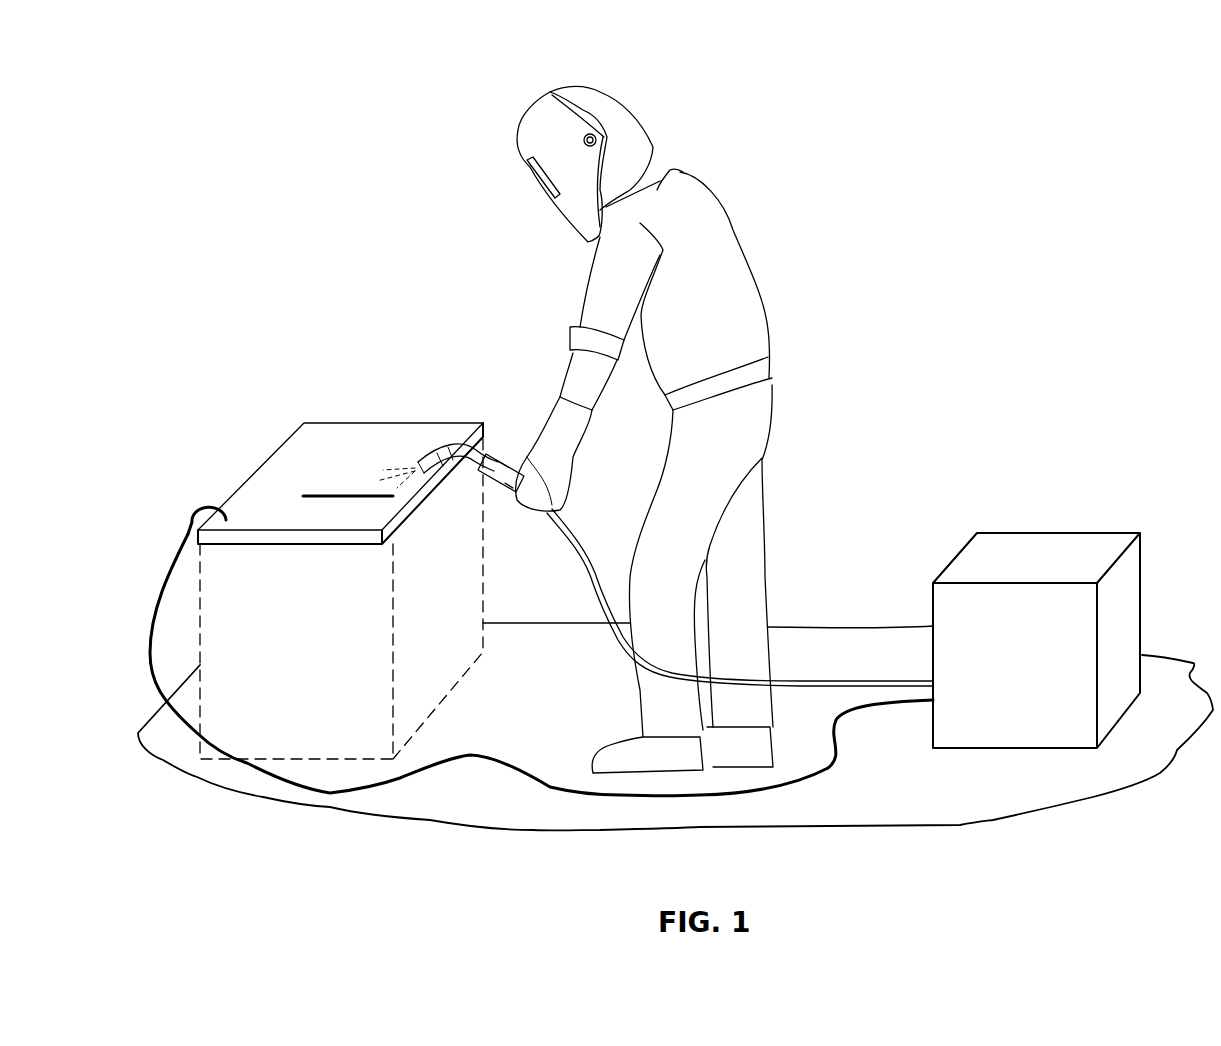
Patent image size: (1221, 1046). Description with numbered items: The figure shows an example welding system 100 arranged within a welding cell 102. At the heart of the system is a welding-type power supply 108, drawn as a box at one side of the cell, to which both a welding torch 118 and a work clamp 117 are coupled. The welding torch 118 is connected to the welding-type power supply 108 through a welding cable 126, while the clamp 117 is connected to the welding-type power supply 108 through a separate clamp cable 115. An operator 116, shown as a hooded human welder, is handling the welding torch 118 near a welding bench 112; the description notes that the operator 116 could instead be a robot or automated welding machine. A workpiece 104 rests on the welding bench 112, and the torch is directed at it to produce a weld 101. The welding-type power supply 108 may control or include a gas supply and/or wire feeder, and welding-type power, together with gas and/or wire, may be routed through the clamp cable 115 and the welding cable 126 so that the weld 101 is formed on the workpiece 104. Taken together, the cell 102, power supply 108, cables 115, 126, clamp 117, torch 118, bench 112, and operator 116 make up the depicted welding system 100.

The welding system 100 is at (212, 113).
The weld 101 is at (377, 485).
The welding cell 102 is at (1005, 800).
The workpiece 104 is at (253, 470).
The welding-type power supply 108 is at (1043, 540).
The welding bench 112 is at (306, 656).
The clamp cable 115 is at (517, 765).
The operator 116 is at (693, 180).
The work clamp 117 is at (197, 515).
The welding torch 118 is at (517, 448).
The welding cable 126 is at (818, 677).